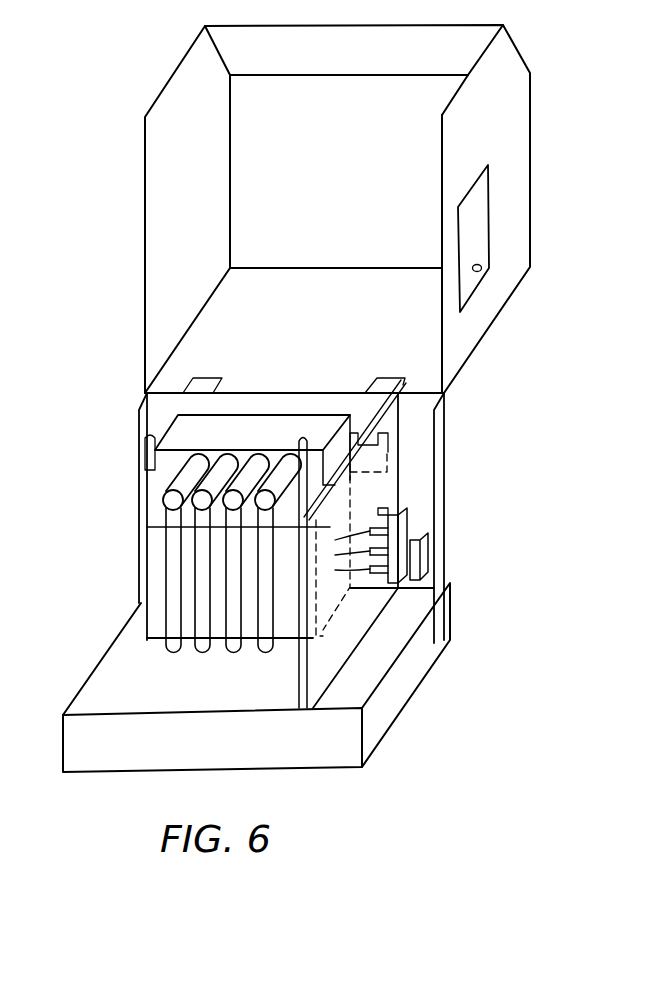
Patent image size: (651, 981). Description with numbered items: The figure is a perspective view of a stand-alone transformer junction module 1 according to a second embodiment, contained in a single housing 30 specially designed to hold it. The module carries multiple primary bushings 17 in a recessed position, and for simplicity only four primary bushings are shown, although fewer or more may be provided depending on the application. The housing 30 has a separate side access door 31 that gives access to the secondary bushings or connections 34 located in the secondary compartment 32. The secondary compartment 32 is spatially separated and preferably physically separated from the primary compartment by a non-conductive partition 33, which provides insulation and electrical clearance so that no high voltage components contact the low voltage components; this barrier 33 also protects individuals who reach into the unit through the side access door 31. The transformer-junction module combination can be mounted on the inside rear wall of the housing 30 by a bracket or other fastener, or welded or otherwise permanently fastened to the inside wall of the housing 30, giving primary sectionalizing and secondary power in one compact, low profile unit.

The transformer junction module 1 is at (170, 437).
The primary bushings 17 is at (168, 493).
The housing 30 is at (518, 147).
The side access door 31 is at (483, 238).
The secondary compartment 32 is at (412, 475).
The non-conductive partition 33 is at (333, 647).
The secondary bushings or connections 34 is at (410, 545).